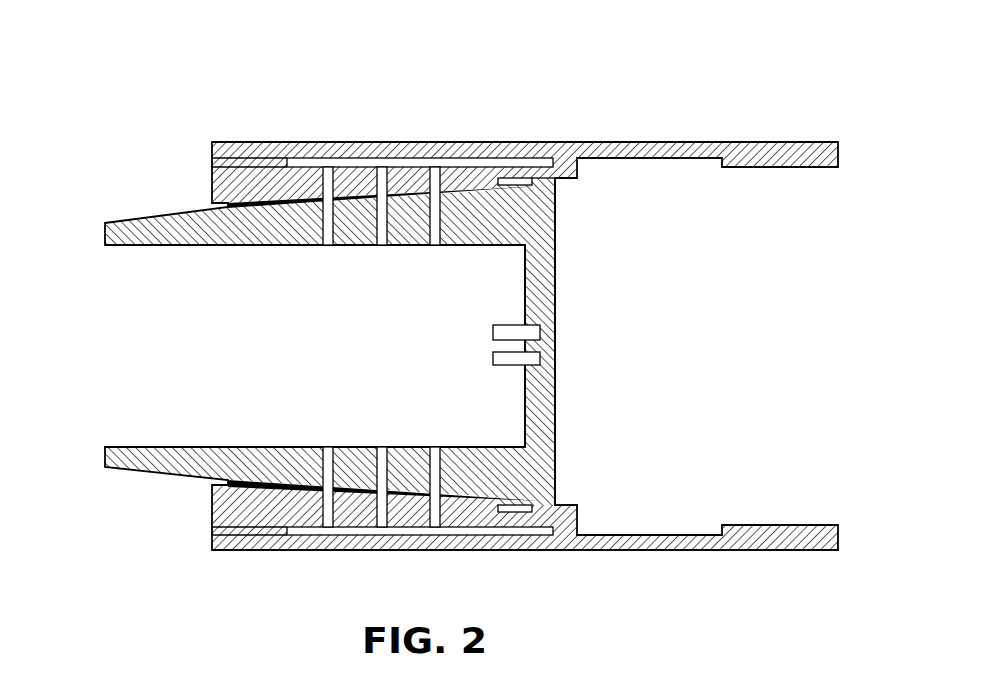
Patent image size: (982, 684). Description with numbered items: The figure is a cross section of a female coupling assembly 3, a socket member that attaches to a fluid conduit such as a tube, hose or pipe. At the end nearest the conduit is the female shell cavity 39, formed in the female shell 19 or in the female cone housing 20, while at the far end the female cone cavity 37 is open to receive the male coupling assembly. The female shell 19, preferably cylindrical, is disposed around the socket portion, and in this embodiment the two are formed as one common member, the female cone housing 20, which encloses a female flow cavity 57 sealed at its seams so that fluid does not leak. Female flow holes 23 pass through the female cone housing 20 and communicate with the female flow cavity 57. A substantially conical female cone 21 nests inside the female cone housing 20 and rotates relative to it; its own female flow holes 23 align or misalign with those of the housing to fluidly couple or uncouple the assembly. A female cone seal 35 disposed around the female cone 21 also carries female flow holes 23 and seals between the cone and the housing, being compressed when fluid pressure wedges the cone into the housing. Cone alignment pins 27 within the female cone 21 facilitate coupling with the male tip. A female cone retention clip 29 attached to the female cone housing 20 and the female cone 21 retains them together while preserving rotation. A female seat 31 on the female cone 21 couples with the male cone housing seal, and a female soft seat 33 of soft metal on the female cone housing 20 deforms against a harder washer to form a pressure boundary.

The female coupling assembly 3 is at (662, 40).
The female shell 19 is at (372, 142).
The female cone housing 20 is at (212, 157).
The female cone 21 is at (555, 341).
The female flow holes 23 is at (327, 447).
The cone alignment pins 27 is at (493, 357).
The female cone retention clip 29 is at (550, 217).
The female seat 31 is at (105, 449).
The female soft seat 33 is at (212, 535).
The female cone seal 35 is at (223, 207).
The female cone cavity 37 is at (140, 343).
The female shell cavity 39 is at (747, 335).
The female flow cavity 57 is at (402, 530).